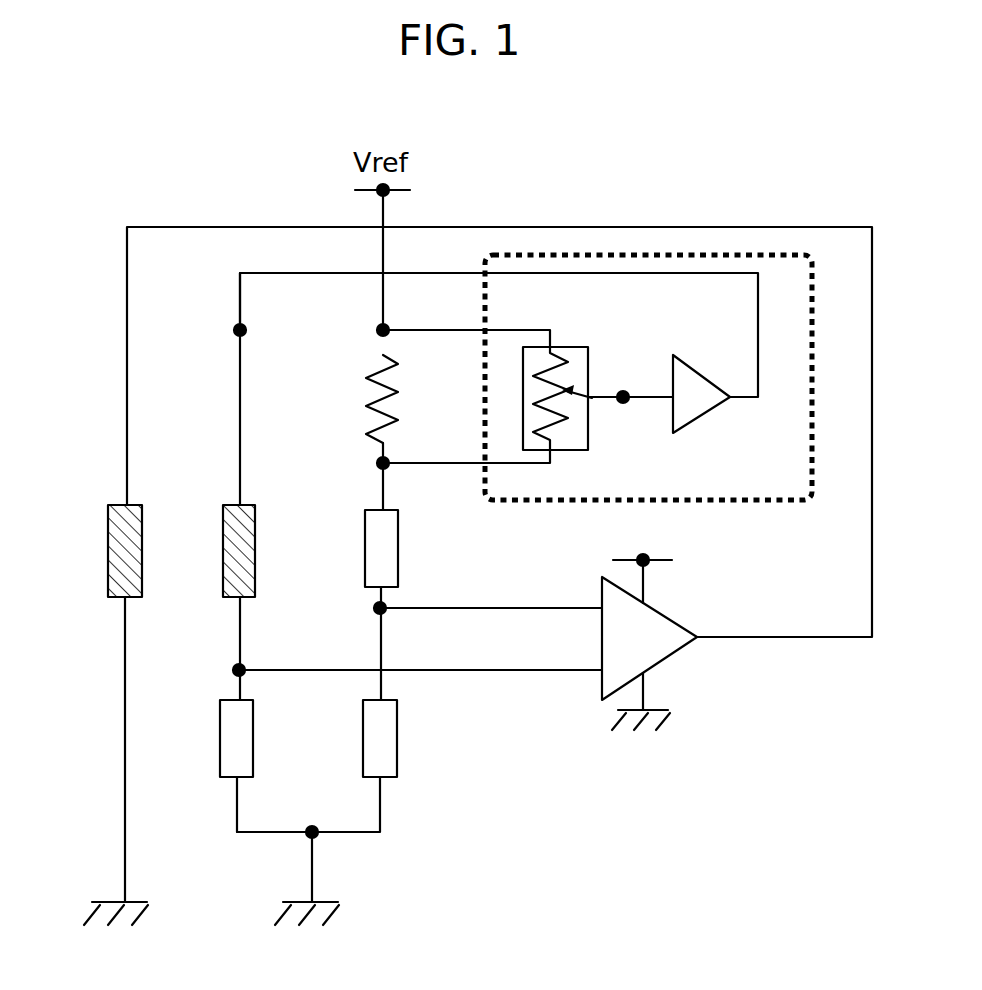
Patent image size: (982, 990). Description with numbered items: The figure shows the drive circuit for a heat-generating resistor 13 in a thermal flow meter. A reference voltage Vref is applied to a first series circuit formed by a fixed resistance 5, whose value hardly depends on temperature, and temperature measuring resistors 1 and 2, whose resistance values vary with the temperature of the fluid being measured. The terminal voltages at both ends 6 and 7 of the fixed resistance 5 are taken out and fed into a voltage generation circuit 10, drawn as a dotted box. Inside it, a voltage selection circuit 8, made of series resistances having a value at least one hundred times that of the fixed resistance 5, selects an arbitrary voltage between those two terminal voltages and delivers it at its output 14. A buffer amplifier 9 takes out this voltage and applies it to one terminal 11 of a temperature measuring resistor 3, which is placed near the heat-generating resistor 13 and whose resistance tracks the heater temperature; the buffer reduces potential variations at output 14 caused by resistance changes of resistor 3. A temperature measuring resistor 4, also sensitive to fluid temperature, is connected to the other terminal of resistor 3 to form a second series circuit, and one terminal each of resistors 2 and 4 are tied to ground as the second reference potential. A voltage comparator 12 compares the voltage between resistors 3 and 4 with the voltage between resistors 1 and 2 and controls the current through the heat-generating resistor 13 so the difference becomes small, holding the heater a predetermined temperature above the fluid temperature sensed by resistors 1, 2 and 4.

The temperature measuring resistor 1 is at (365, 562).
The temperature measuring resistor 2 is at (397, 740).
The temperature measuring resistor 3 is at (223, 548).
The temperature measuring resistor 4 is at (220, 740).
The fixed resistance 5 is at (380, 400).
The end of the fixed resistance 6 is at (380, 330).
The end of the fixed resistance 7 is at (380, 462).
The voltage selection circuit 8 is at (583, 418).
The buffer amplifier 9 is at (700, 397).
The voltage generation circuit 10 is at (757, 502).
The terminal of the temperature measuring resistor 11 is at (238, 328).
The voltage comparator 12 is at (655, 647).
The heat-generating resistor 13 is at (108, 548).
The output of the voltage selection circuit 14 is at (623, 392).